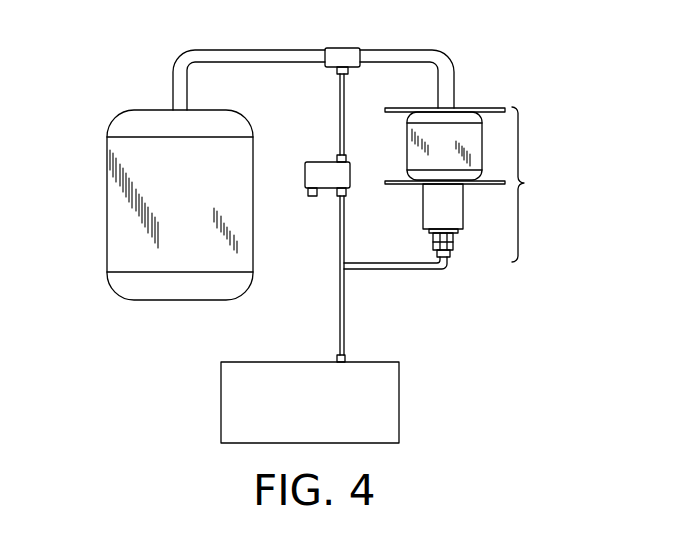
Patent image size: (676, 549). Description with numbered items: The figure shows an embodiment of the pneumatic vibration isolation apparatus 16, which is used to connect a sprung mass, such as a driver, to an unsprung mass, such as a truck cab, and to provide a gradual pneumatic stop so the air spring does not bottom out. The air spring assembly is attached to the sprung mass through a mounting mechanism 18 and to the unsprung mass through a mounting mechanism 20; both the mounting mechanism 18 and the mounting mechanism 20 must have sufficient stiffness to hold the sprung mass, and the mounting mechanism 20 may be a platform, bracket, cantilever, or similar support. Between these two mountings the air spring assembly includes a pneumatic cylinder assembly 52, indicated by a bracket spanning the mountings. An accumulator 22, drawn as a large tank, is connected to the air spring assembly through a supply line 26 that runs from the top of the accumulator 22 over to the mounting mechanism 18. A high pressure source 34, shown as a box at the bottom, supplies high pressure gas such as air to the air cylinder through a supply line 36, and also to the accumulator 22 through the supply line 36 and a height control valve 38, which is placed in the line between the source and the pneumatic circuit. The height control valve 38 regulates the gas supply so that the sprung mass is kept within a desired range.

The apparatus 16 is at (98, 94).
The mounting mechanism 18 is at (490, 107).
The mounting mechanism 20 is at (492, 184).
The accumulator 22 is at (107, 227).
The supply line 26 is at (314, 57).
The high pressure source 34 is at (255, 362).
The supply line 36 is at (337, 302).
The height control valve 38 is at (322, 162).
The pneumatic cylinder assembly 52 is at (449, 167).